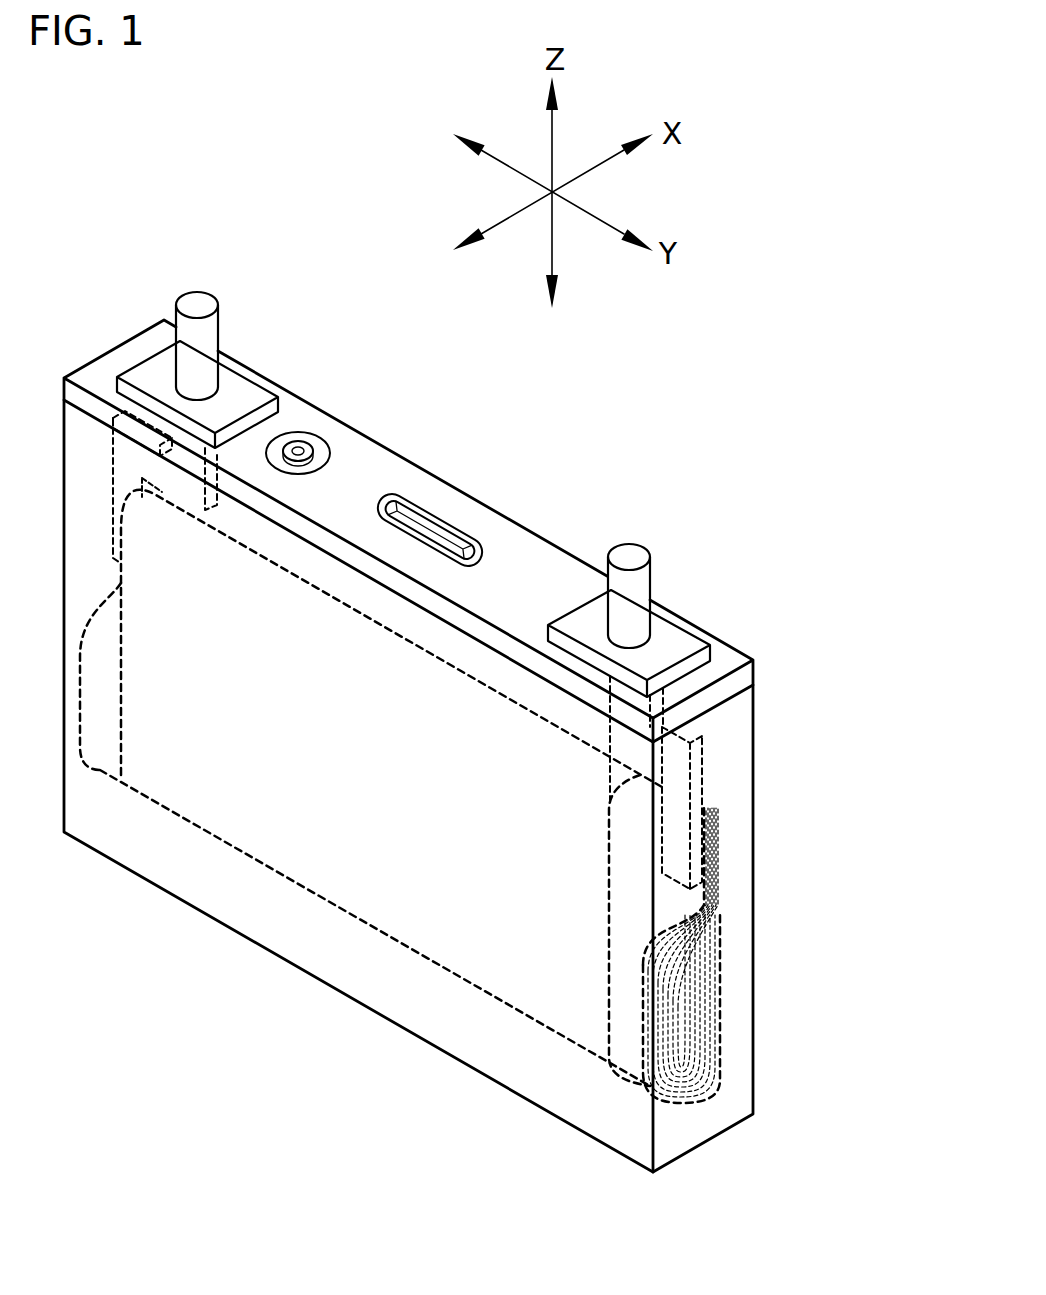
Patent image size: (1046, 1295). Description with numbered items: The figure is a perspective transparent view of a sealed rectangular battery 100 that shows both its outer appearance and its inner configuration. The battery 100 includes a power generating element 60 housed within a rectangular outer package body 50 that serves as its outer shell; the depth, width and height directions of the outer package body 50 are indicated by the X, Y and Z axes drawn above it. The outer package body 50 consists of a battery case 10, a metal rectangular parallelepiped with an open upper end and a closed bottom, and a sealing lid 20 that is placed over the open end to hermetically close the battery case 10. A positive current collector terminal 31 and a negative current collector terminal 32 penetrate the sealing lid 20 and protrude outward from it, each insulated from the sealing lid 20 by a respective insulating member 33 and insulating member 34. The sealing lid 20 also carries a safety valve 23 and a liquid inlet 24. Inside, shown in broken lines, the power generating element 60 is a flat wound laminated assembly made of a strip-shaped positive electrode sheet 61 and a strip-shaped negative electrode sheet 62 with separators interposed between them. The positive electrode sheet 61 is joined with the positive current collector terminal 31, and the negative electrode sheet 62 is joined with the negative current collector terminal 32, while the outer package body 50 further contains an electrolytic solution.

The battery 100 is at (598, 437).
The battery case 10 is at (745, 767).
The sealing lid 20 is at (748, 677).
The outer package body 50 is at (825, 663).
The safety valve 23 is at (428, 525).
The liquid inlet 24 is at (298, 443).
The positive current collector terminal 31 is at (117, 479).
The negative current collector terminal 32 is at (690, 843).
The insulating member 33 is at (240, 392).
The insulating member 34 is at (673, 638).
The power generating element 60 is at (338, 890).
The positive electrode sheet 61 is at (110, 765).
The negative electrode sheet 62 is at (615, 1032).